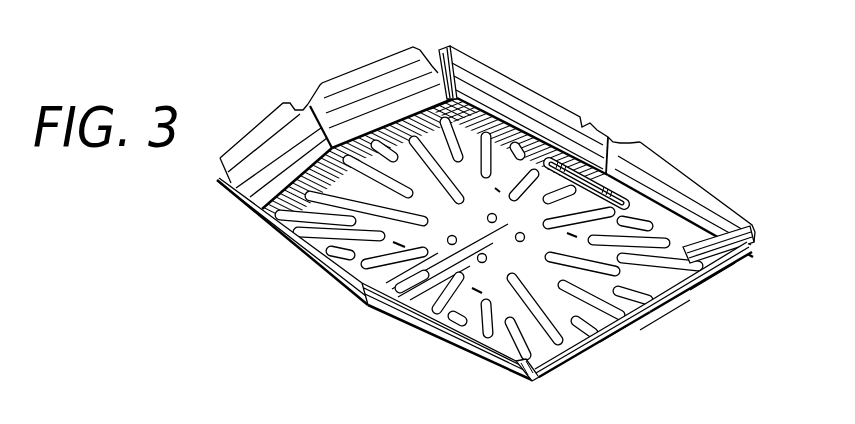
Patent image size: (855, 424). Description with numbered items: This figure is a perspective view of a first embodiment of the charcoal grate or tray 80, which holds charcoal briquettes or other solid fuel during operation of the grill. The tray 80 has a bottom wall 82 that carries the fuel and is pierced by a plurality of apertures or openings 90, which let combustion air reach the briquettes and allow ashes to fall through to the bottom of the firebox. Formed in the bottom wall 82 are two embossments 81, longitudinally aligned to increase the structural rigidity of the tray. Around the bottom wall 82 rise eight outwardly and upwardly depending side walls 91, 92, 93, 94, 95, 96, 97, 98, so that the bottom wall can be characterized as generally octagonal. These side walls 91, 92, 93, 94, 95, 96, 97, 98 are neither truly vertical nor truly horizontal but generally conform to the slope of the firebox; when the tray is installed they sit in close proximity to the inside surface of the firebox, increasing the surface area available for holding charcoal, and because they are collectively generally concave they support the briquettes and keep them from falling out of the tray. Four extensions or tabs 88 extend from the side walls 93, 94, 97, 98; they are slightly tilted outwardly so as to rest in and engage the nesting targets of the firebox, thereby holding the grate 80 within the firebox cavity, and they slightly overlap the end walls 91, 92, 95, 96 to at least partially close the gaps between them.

The charcoal grate 80 is at (270, 89).
The embossment 81 is at (573, 167).
The bottom wall 82 is at (503, 142).
The tab 88 is at (440, 68).
The aperture 90 is at (686, 246).
The side wall 91 is at (267, 146).
The side wall 92 is at (357, 91).
The side wall 93 is at (477, 82).
The side wall 94 is at (652, 165).
The side wall 95 is at (711, 272).
The side wall 96 is at (613, 345).
The side wall 97 is at (407, 313).
The side wall 98 is at (281, 239).